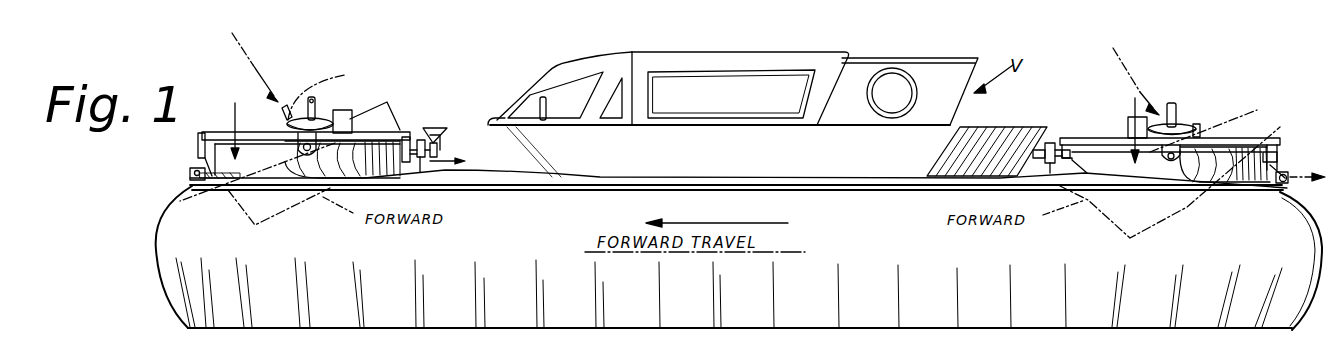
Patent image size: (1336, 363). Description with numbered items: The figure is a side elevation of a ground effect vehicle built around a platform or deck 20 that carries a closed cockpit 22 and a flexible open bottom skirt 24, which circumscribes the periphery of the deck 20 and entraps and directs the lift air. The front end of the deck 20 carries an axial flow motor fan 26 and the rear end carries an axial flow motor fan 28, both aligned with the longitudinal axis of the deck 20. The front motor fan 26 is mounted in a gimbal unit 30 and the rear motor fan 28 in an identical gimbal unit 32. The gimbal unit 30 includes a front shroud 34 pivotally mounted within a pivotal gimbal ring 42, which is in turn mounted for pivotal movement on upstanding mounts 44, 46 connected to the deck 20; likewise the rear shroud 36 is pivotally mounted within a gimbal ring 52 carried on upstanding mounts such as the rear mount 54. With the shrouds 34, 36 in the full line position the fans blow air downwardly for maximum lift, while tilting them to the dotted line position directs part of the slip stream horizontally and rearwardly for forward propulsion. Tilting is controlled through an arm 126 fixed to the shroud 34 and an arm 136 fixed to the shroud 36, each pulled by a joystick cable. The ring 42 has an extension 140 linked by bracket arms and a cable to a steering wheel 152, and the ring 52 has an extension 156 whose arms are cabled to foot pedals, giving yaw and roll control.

The deck 20 is at (490, 178).
The closed cockpit 22 is at (530, 80).
The flexible open bottom skirt 24 is at (163, 272).
The front axial flow motor fan 26 is at (302, 125).
The rear axial flow motor fan 28 is at (1182, 130).
The front gimbal unit 30 is at (418, 92).
The rear gimbal unit 32 is at (1216, 92).
The front shroud 34 is at (230, 160).
The rear shroud 36 is at (1262, 117).
The front gimbal ring 42 is at (220, 132).
The upstanding mount 44 is at (192, 170).
The upstanding mount 46 is at (433, 142).
The rear gimbal ring 52 is at (1083, 140).
The rear upstanding mount 54 is at (1287, 173).
The arm 126 is at (320, 102).
The arm 136 is at (1178, 110).
The ring extension 140 is at (432, 138).
The steering wheel 152 is at (546, 106).
The ring extension 156 is at (1036, 142).